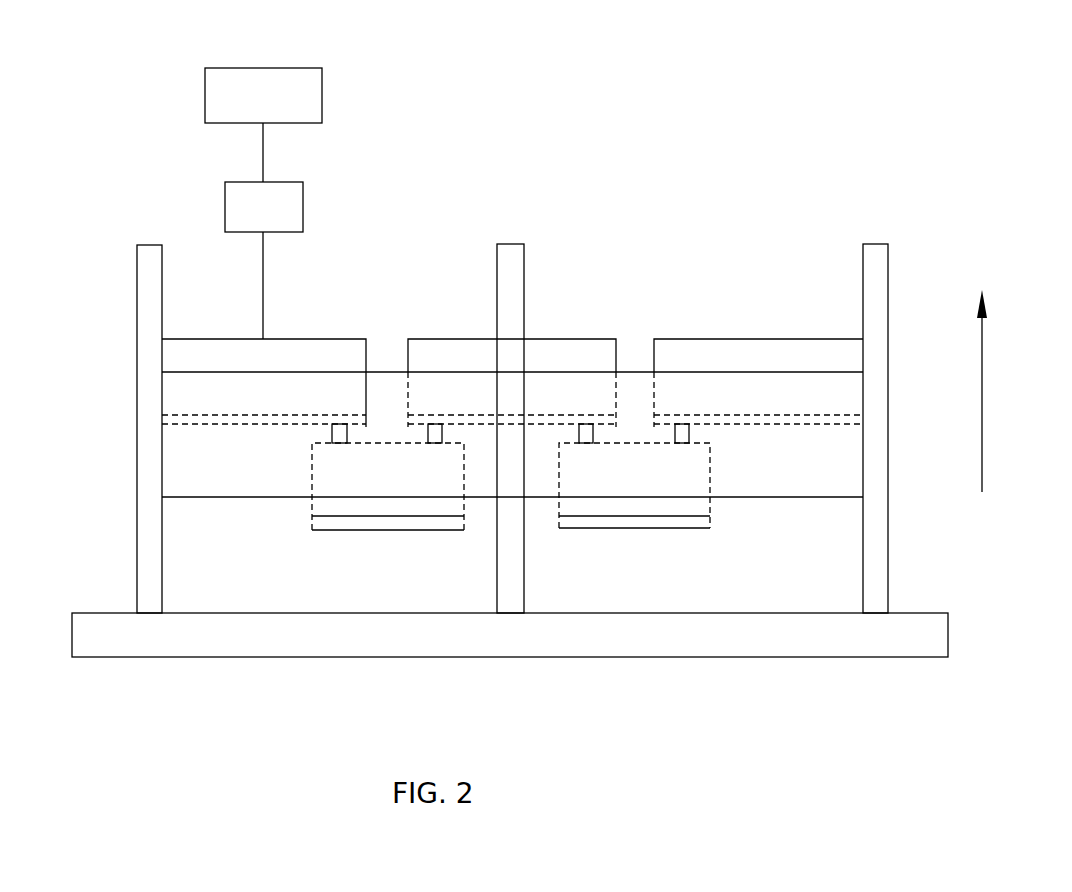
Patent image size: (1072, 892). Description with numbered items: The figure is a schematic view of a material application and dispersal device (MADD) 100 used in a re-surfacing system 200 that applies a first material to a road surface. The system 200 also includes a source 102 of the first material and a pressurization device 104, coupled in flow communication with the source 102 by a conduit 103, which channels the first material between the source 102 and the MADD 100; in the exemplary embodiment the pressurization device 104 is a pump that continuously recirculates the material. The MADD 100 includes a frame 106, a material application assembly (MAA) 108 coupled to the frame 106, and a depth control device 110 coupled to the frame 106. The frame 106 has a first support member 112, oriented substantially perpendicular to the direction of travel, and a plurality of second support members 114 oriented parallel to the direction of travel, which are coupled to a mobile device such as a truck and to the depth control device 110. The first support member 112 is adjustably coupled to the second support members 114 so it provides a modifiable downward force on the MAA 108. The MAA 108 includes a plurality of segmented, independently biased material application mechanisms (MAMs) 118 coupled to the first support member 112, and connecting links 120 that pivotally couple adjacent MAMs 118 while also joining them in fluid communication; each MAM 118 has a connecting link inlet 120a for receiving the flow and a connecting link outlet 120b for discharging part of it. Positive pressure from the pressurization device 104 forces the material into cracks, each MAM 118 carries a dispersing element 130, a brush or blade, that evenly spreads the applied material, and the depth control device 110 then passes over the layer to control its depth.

The re-surfacing system 200 is at (76, 121).
The material application and dispersal device (MADD) 100 is at (740, 190).
The source 102 is at (283, 107).
The pressurization device 104 is at (284, 218).
The conduit 103 is at (267, 275).
The frame 106 is at (116, 266).
The material application assembly (MAA) 108 is at (809, 300).
The depth control device 110 is at (192, 650).
The first support member 112 is at (222, 497).
The second support members 114 is at (148, 312).
The material application mechanisms (MAMs) 118 is at (213, 337).
The connecting links 120 is at (434, 411).
The connecting link inlet 120a is at (573, 437).
The connecting link outlet 120b is at (693, 437).
The dispersing element 130 is at (240, 418).